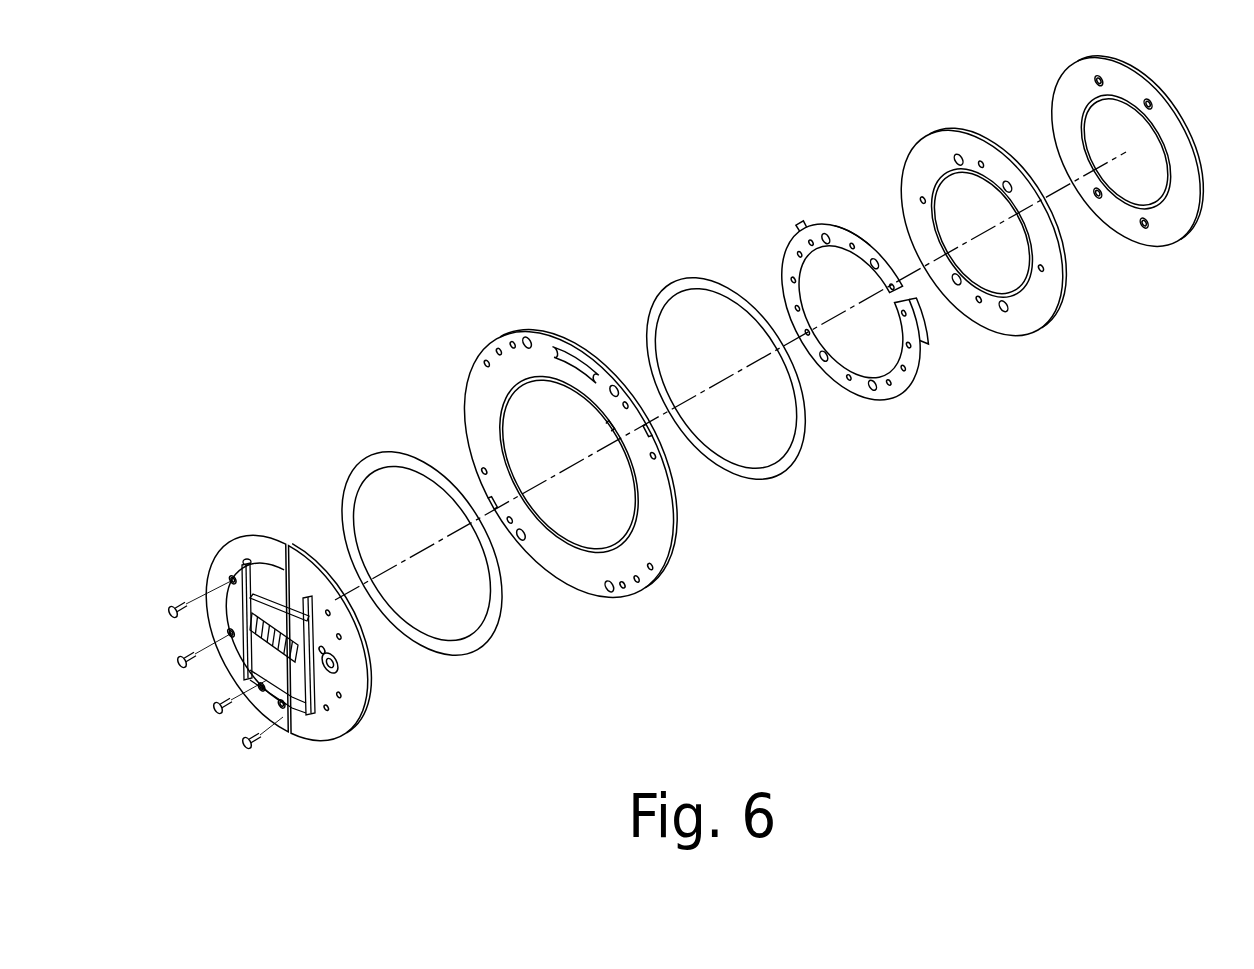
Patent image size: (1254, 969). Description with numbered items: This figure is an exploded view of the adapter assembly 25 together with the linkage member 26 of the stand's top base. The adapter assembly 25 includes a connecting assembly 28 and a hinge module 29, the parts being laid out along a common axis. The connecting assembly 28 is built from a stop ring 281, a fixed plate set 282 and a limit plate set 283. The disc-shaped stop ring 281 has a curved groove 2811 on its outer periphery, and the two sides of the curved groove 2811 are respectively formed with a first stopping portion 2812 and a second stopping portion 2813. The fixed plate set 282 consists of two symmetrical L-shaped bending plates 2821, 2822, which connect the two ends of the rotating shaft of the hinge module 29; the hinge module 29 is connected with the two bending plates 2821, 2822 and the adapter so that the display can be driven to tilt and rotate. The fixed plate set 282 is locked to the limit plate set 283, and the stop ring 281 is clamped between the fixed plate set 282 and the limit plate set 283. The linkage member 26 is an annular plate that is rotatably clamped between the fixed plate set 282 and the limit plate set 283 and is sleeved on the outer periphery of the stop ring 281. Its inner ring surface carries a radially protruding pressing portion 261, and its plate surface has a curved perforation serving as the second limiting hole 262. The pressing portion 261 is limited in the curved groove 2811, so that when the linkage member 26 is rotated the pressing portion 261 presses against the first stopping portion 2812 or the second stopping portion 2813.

The adapter assembly 25 is at (775, 566).
The linkage member 26 is at (519, 330).
The pressing portion 261 is at (613, 443).
The second limiting hole 262 is at (571, 357).
The connecting assembly 28 is at (874, 140).
The stop ring 281 is at (910, 388).
The curved groove 2811 is at (847, 230).
The first stopping portion 2812 is at (802, 230).
The second stopping portion 2813 is at (918, 335).
The fixed plate set 282 is at (228, 538).
The bending plate 2821 is at (224, 572).
The bending plate 2822 is at (327, 722).
The limit plate set 283 is at (1120, 296).
The hinge module 29 is at (298, 717).